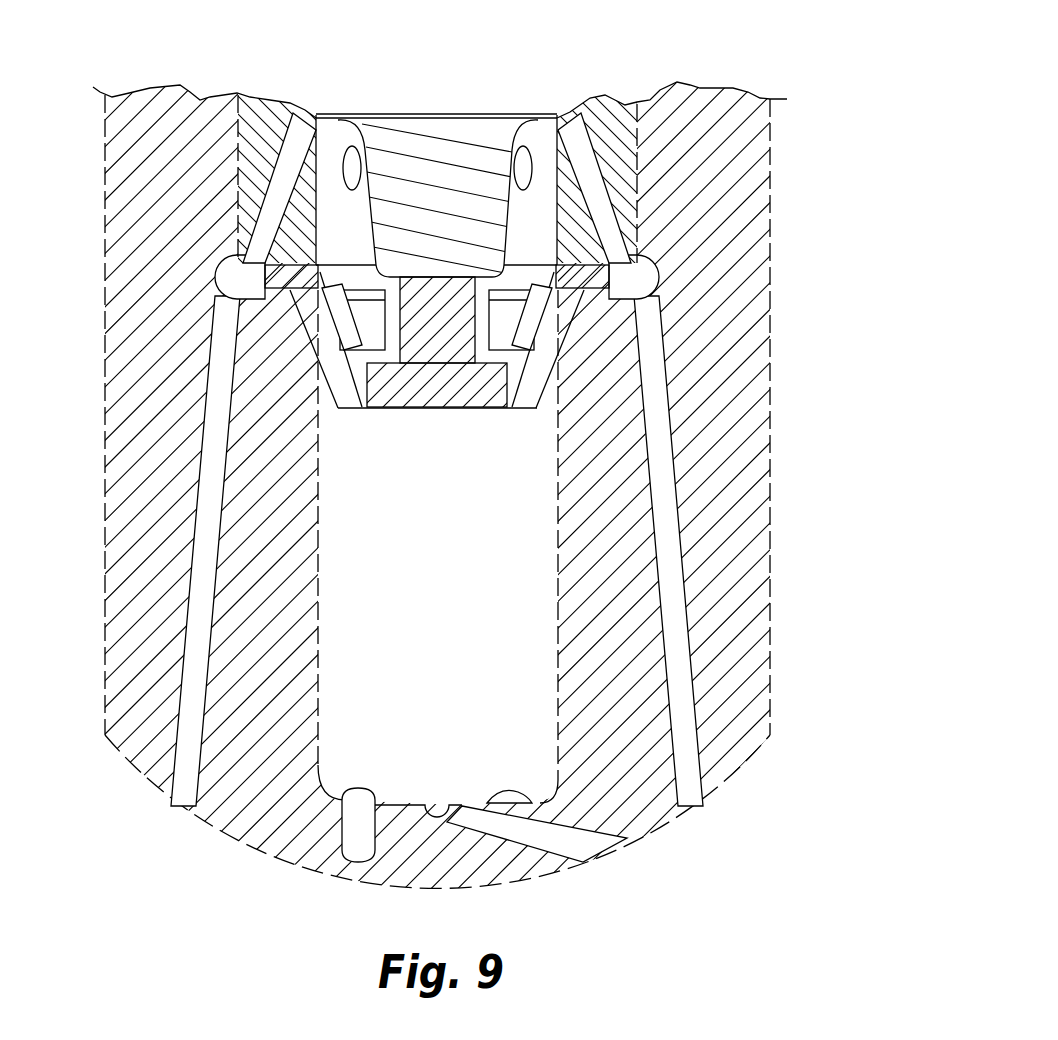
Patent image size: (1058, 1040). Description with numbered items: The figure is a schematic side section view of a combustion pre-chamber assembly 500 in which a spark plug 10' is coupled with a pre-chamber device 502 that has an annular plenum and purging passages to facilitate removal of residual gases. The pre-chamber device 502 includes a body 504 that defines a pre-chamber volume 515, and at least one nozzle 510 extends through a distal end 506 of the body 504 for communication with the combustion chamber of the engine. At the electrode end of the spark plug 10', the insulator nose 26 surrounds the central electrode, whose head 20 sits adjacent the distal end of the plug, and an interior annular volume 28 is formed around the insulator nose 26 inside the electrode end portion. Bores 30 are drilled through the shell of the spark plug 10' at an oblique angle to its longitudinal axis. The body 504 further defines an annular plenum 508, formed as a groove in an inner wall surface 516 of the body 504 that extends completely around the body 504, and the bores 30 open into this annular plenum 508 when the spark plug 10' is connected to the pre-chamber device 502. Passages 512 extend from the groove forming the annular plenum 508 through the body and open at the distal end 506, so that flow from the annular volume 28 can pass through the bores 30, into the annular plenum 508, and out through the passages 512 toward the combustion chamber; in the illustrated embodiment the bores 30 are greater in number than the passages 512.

The spark plug 10' is at (474, 143).
The head of the central electrode 20 is at (440, 388).
The insulator nose 26 is at (500, 142).
The interior annular volume 28 is at (530, 235).
The bore 30 is at (277, 195).
The combustion pre-chamber assembly 500 is at (868, 147).
The pre-chamber device 502 is at (770, 560).
The body 504 is at (715, 452).
The distal end 506 is at (305, 868).
The annular plenum 508 is at (658, 268).
The nozzle 510 is at (362, 847).
The passage 512 is at (225, 487).
The pre-chamber volume 515 is at (495, 697).
The inner wall surface 516 is at (240, 150).